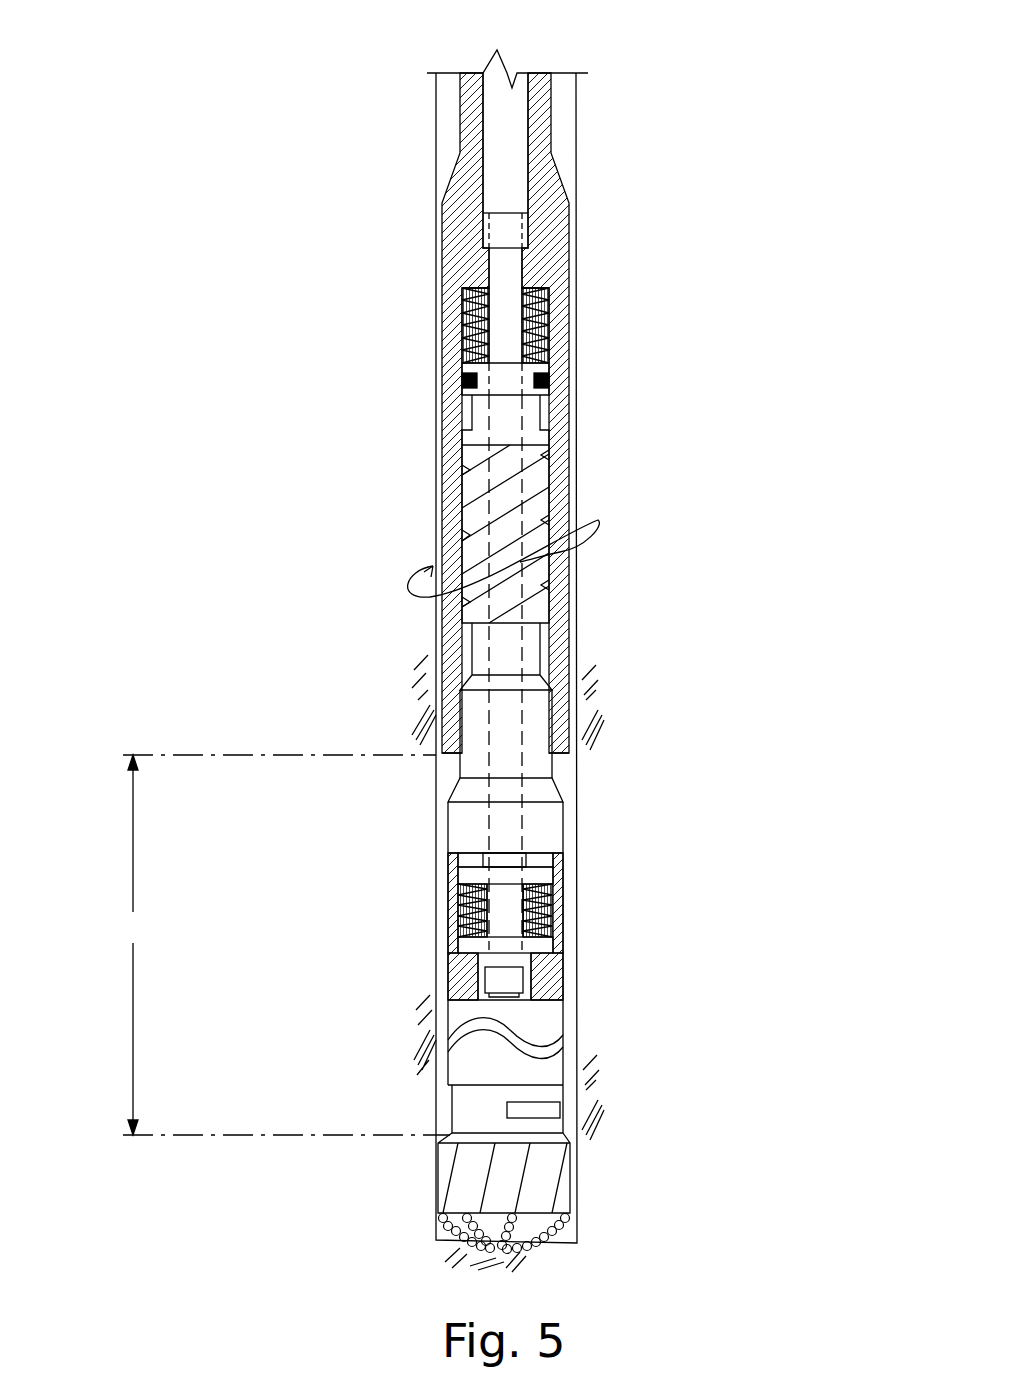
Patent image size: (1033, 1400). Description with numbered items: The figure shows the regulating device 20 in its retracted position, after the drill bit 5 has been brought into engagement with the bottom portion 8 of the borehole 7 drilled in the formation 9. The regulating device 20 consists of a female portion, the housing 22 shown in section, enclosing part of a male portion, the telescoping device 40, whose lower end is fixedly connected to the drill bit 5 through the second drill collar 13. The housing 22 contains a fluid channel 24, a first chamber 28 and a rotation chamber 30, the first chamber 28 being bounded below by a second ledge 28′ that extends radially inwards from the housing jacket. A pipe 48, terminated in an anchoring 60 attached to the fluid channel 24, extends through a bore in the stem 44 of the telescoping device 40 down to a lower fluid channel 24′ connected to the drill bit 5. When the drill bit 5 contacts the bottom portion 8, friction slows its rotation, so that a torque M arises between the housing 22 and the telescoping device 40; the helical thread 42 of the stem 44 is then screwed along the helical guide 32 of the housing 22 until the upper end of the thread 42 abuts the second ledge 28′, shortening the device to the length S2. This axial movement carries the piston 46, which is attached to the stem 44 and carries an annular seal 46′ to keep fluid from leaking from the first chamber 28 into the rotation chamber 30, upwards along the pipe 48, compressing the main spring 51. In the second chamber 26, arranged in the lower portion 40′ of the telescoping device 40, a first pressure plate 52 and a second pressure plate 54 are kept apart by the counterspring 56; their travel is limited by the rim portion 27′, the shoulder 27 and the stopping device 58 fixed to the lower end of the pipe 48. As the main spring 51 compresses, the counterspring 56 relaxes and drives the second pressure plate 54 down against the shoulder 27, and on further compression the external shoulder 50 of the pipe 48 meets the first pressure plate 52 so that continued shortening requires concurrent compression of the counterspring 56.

The regulating device 20 is at (273, 100).
The borehole 7 is at (452, 152).
The housing 22 is at (440, 237).
The fluid channel 24 is at (508, 137).
The anchoring 60 is at (528, 232).
The pipe 48 is at (527, 260).
The main spring 51 is at (455, 313).
The first chamber 28 is at (538, 318).
The annular seal 46′ is at (455, 378).
The piston 46 is at (549, 390).
The rotation chamber 30 is at (540, 465).
The second ledge 28′ is at (462, 450).
The helical thread 42 is at (549, 548).
The torque M is at (519, 547).
The telescoping device 40 is at (449, 530).
The stem 44 is at (470, 637).
The helical guide 32 is at (540, 612).
The formation 9 is at (627, 721).
The second drill collar 13 is at (563, 1057).
The rim portion 27′ is at (452, 830).
The external shoulder 50 is at (545, 868).
The first pressure plate 52 is at (455, 875).
The counterspring 56 is at (545, 885).
The second chamber 26 is at (549, 920).
The lower portion of the telescoping device 40′ is at (449, 903).
The second pressure plate 54 is at (455, 948).
The shoulder 27 is at (549, 967).
The stopping device 58 is at (478, 985).
The lower fluid channel 24′ is at (523, 985).
The drill bit 5 is at (570, 1182).
The bottom portion 8 is at (543, 1250).
The length S2 is at (281, 945).